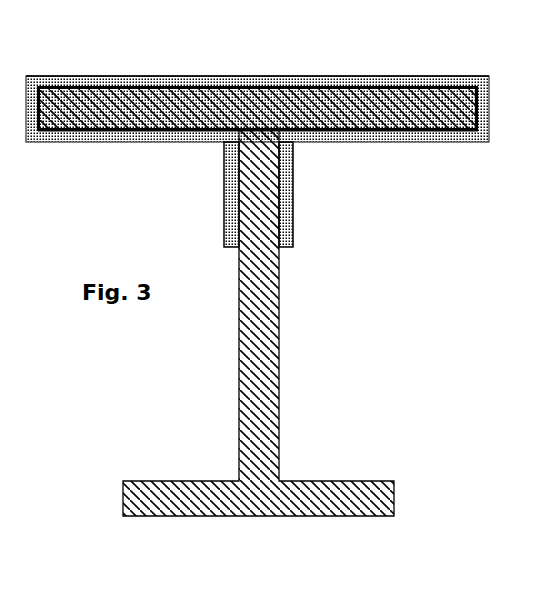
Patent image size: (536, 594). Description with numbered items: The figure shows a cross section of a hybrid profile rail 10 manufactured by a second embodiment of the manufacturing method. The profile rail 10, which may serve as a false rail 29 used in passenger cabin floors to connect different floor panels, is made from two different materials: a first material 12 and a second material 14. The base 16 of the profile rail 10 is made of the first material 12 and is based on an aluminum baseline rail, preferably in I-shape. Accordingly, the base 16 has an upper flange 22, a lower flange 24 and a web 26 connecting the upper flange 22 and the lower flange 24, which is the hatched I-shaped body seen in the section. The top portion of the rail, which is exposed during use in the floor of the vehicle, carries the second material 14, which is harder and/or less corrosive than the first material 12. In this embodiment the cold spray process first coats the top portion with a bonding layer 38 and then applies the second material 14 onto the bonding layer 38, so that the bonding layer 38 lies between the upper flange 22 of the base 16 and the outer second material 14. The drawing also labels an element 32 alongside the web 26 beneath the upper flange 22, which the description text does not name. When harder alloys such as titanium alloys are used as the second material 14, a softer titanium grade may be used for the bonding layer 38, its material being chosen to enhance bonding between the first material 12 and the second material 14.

The profile rail 10 is at (380, 358).
The first material 12 is at (185, 76).
The second material 14 is at (437, 142).
The base 16 is at (246, 190).
The upper flange 22 is at (352, 77).
The lower flange 24 is at (322, 517).
The web 26 is at (239, 367).
The false rail 29 is at (390, 58).
The side plate 32 is at (297, 182).
The bonding layer 38 is at (362, 142).